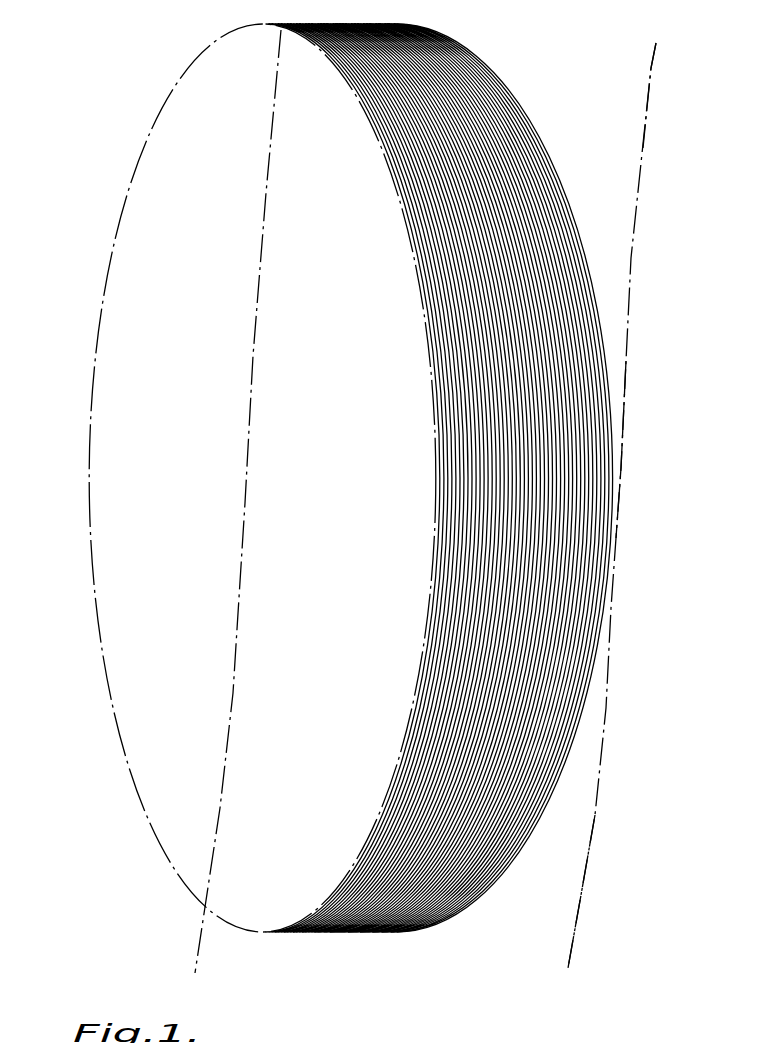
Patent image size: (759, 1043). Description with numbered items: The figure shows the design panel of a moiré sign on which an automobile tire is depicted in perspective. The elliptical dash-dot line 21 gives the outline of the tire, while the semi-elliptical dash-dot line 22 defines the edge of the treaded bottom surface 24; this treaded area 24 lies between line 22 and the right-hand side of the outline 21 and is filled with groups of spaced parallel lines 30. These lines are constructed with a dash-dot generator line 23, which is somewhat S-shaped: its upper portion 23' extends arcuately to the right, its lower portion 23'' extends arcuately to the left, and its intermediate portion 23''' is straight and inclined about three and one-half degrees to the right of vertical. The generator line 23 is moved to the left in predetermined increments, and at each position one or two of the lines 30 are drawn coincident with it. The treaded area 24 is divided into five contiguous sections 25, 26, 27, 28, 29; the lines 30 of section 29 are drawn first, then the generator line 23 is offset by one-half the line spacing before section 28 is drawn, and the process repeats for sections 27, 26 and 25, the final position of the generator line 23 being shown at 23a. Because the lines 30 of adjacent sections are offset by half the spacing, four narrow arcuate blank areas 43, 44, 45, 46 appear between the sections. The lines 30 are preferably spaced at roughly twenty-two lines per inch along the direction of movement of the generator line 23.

The elliptical dash-dot line 21 is at (103, 662).
The semi-elliptical dash-dot line 22 is at (423, 367).
The generator line 23 is at (624, 505).
The upper portion of generator line 23' is at (673, 95).
The lower portion of generator line 23'' is at (606, 891).
The intermediate portion of generator line 23''' is at (650, 449).
The final position of generator line 23a is at (244, 529).
The treaded bottom surface 24 is at (422, 542).
The tread section 25 is at (440, 495).
The tread section 26 is at (467, 453).
The tread section 27 is at (523, 430).
The tread section 28 is at (553, 377).
The tread section 29 is at (578, 330).
The spaced parallel lines 30 is at (590, 552).
The arcuate blank area 43 is at (440, 685).
The arcuate blank area 44 is at (483, 667).
The arcuate blank area 45 is at (520, 678).
The arcuate blank area 46 is at (567, 617).